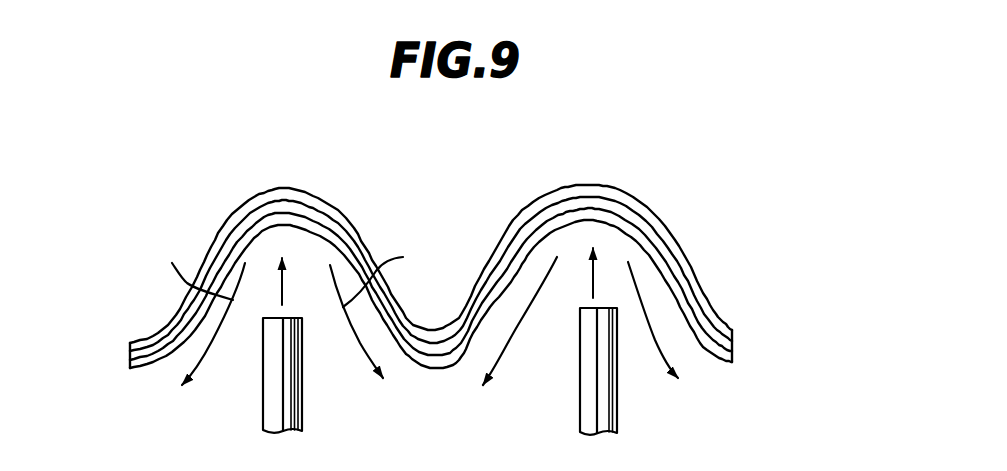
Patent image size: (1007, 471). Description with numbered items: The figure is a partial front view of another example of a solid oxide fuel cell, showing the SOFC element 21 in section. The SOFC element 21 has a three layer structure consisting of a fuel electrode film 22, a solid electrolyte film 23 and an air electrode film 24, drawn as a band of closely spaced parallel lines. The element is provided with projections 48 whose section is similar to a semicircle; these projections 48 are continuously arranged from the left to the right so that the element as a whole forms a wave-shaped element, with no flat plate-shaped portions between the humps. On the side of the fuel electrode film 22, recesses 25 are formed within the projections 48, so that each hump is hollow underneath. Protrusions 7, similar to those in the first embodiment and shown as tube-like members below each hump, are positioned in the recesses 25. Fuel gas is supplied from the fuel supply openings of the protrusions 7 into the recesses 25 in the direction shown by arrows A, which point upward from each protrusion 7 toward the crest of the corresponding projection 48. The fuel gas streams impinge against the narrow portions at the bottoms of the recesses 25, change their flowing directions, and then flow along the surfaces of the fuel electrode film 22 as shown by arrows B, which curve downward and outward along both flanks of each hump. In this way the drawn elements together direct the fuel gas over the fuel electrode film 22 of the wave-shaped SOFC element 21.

The SOFC element 21 is at (676, 228).
The fuel electrode film 22 is at (735, 363).
The solid electrolyte film 23 is at (733, 348).
The air electrode film 24 is at (735, 330).
The recess 25 is at (317, 240).
The projection 48 is at (293, 197).
The protrusion 7 is at (278, 402).
The arrows A is at (283, 278).
The arrows B is at (285, 268).